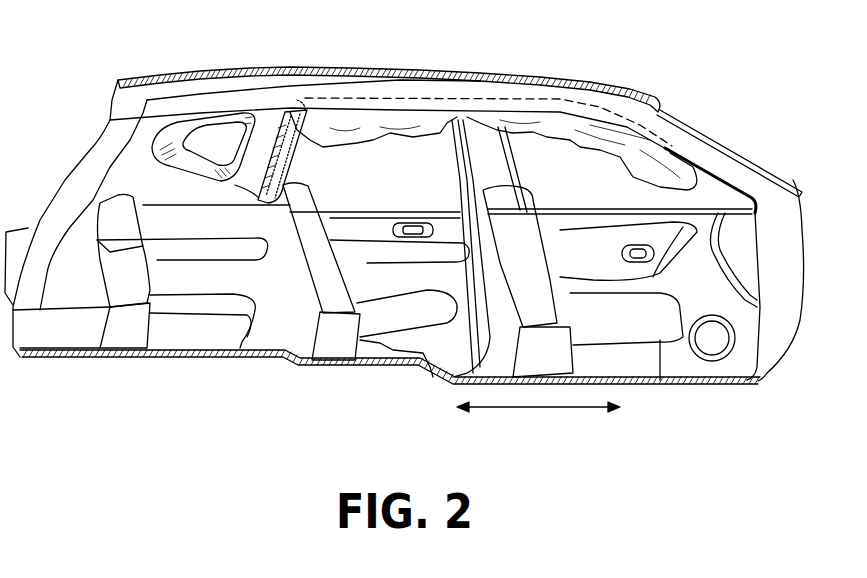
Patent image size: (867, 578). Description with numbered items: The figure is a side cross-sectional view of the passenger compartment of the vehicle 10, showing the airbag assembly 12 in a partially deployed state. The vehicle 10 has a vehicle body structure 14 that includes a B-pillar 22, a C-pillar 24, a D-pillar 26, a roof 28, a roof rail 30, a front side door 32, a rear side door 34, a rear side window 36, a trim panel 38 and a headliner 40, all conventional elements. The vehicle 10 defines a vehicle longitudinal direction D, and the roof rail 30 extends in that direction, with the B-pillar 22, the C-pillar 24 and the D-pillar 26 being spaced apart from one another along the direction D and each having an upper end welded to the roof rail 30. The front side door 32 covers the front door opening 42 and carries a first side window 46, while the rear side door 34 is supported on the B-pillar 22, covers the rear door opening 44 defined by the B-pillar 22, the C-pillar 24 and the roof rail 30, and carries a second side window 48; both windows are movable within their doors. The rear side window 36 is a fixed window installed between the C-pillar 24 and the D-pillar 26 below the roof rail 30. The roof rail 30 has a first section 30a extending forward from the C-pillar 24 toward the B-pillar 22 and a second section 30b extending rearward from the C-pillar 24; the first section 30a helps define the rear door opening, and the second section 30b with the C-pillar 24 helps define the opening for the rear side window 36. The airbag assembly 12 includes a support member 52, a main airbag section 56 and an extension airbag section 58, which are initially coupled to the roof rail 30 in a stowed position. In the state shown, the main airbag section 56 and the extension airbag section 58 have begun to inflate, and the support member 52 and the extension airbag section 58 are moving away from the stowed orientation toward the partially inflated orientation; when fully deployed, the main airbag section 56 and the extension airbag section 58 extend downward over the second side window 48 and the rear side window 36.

The vehicle 10 is at (383, 53).
The airbag assembly 12 is at (469, 91).
The vehicle body structure 14 is at (270, 50).
The B-pillar 22 is at (498, 186).
The C-pillar 24 is at (284, 177).
The D-pillar 26 is at (97, 157).
The roof 28 is at (580, 84).
The roof rail 30 is at (263, 100).
The first section of roof rail 30a is at (408, 90).
The second section of roof rail 30b is at (288, 151).
The front side door 32 is at (685, 367).
The rear side door 34 is at (458, 347).
The rear side window 36 is at (213, 133).
The trim panel 38 is at (348, 90).
The headliner 40 is at (545, 66).
The front door opening 42 is at (510, 166).
The rear door opening 44 is at (460, 204).
The first side window 46 is at (713, 193).
The second side window 48 is at (440, 154).
The support member 52 is at (472, 115).
The main airbag section 56 is at (378, 123).
The extension airbag section 58 is at (257, 198).
The vehicle longitudinal direction D is at (542, 408).